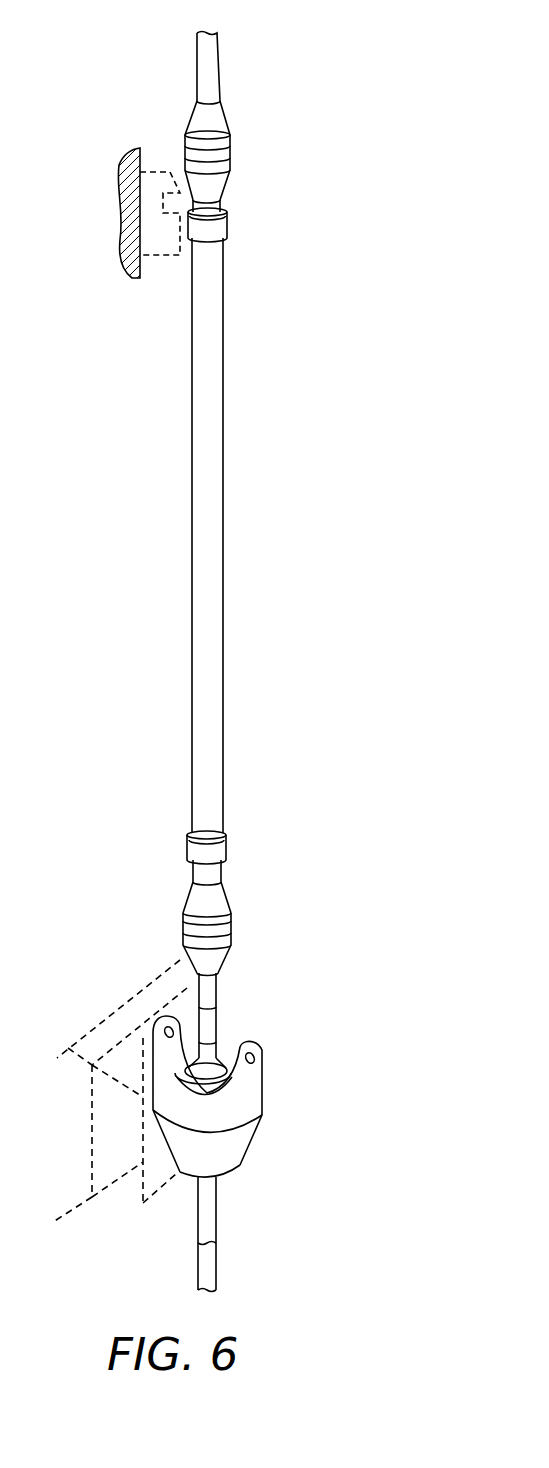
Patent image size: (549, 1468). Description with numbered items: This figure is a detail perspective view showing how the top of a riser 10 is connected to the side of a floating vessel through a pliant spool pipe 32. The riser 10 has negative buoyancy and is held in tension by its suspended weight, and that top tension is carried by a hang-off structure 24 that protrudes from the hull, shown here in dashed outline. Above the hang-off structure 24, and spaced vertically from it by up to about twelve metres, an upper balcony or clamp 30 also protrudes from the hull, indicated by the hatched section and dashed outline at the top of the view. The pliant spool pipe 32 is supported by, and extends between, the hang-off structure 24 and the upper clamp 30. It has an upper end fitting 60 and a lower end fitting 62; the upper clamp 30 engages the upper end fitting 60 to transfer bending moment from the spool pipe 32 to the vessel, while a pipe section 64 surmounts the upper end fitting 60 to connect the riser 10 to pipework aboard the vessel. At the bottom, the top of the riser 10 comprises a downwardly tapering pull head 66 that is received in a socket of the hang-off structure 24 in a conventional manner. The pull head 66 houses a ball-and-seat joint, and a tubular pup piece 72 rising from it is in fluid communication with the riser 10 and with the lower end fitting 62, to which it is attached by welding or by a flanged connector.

The riser 10 is at (216, 1218).
The hang-off structure 24 is at (87, 1013).
The upper clamp 30 is at (122, 144).
The pliant spool pipe 32 is at (223, 500).
The upper end fitting 60 is at (230, 180).
The lower end fitting 62 is at (231, 898).
The pipe section 64 is at (220, 50).
The pull head 66 is at (262, 1080).
The pup piece 72 is at (216, 992).